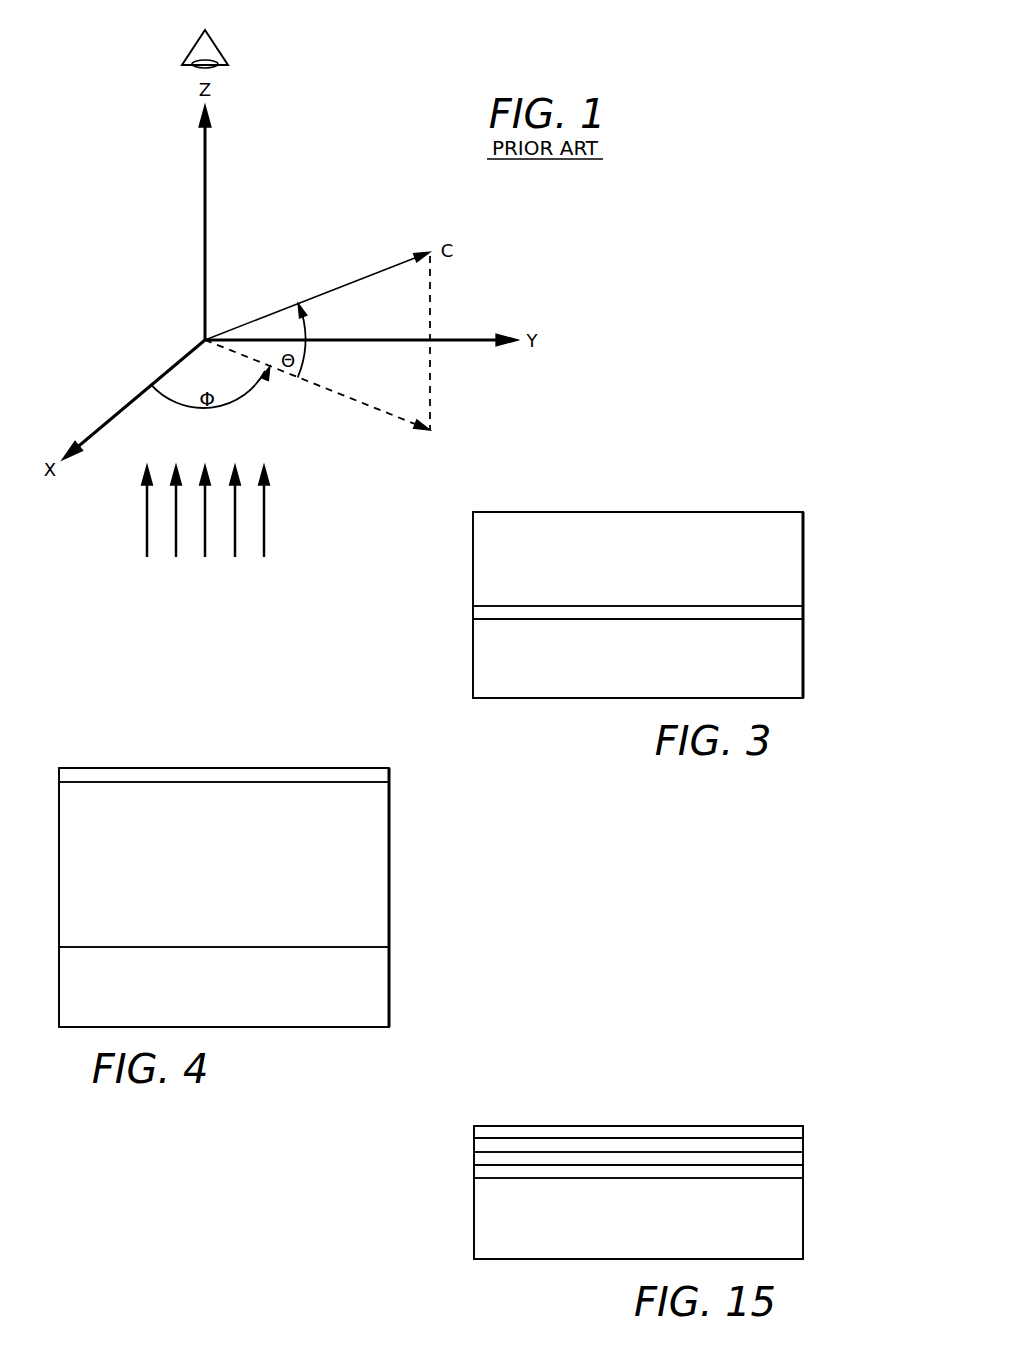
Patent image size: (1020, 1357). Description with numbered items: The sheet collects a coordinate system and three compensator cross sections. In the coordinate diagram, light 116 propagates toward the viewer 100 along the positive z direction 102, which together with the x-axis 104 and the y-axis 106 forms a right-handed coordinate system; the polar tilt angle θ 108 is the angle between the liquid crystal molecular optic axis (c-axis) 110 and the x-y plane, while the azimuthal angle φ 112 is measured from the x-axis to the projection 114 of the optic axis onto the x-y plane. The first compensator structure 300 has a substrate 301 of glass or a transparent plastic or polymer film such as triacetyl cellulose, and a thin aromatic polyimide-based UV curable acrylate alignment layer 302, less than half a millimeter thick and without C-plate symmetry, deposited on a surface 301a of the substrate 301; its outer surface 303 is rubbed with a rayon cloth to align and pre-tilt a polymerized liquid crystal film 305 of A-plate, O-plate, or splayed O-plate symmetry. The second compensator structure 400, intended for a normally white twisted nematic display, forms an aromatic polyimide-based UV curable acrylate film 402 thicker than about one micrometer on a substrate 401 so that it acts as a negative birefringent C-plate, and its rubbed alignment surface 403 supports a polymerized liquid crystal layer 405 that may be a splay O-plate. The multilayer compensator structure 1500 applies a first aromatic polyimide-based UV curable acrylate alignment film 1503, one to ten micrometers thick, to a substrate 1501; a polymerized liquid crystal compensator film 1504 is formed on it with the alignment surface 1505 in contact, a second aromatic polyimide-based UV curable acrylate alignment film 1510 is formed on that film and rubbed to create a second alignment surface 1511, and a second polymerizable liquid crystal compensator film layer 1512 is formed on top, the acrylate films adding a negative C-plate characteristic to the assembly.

In FIG. 1, the viewer 100 is at (205, 38).
In FIG. 1, the positive z direction 102 is at (208, 195).
In FIG. 1, the x-axis 104 is at (119, 408).
In FIG. 1, the y-axis 106 is at (460, 340).
In FIG. 1, the polar tilt angle θ 108 is at (308, 330).
In FIG. 1, the liquid crystal molecular optic axis (c-axis) 110 is at (366, 268).
In FIG. 1, the azimuthal angle φ 112 is at (207, 413).
In FIG. 1, the projection of the optic axis onto the x-y plane 114 is at (356, 403).
In FIG. 1, the light 116 is at (266, 522).
In FIG. 3, the compensator structure 300 is at (743, 477).
In FIG. 3, the substrate 301 is at (473, 665).
In FIG. 3, the surface of the substrate 301a is at (782, 618).
In FIG. 3, the aromatic polyimide-based UV curable acrylate alignment layer 302 is at (473, 611).
In FIG. 3, the outer surface 303 is at (495, 605).
In FIG. 3, the polymerized liquid crystal film 305 is at (805, 543).
In FIG. 4, the compensator structure 400 is at (131, 732).
In FIG. 4, the substrate 401 is at (389, 982).
In FIG. 4, the aromatic polyimide-based UV curable acrylate film 402 is at (389, 868).
In FIG. 4, the alignment surface 403 is at (265, 780).
In FIG. 4, the polymerized liquid crystal layer 405 is at (389, 775).
In FIG. 15, the multilayer polymerized liquid crystal compensator structure 1500 is at (760, 1077).
In FIG. 15, the substrate 1501 is at (474, 1225).
In FIG. 15, the first aromatic polyimide-based UV curable acrylate alignment film 1503 is at (474, 1171).
In FIG. 15, the polymerized liquid crystal compensator film 1504 is at (803, 1160).
In FIG. 15, the alignment surface 1505 is at (523, 1165).
In FIG. 15, the second aromatic polyimide-based UV curable acrylate alignment film 1510 is at (474, 1145).
In FIG. 15, the second alignment surface 1511 is at (612, 1138).
In FIG. 15, the second polymerizable liquid crystal compensator film layer 1512 is at (803, 1132).